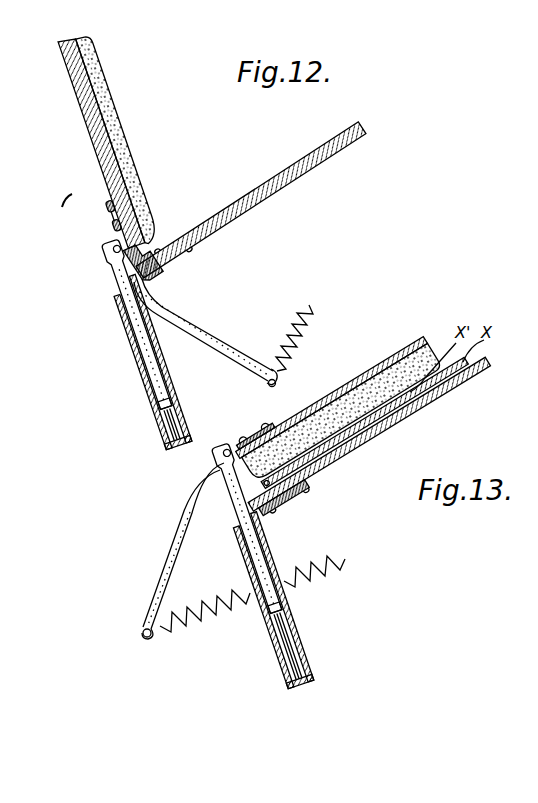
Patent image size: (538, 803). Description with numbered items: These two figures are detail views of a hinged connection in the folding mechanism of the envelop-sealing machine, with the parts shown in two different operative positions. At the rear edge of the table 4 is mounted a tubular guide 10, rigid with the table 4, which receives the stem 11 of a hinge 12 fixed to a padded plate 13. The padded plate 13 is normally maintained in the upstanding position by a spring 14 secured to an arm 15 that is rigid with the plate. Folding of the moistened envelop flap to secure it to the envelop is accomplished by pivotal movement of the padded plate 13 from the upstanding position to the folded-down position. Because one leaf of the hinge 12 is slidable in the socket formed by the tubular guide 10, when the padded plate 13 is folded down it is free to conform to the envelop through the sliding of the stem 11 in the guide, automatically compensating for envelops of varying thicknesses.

In FIG. 12, the table 4 is at (247, 210).
In FIG. 13, the table 4 is at (470, 374).
In FIG. 12, the tubular guide 10 is at (158, 427).
In FIG. 13, the tubular guide 10 is at (300, 655).
In FIG. 12, the stem 11 is at (118, 279).
In FIG. 13, the stem 11 is at (235, 512).
In FIG. 12, the hinge 12 is at (111, 224).
In FIG. 13, the hinge 12 is at (275, 427).
In FIG. 12, the padded plate 13 is at (97, 135).
In FIG. 13, the padded plate 13 is at (400, 347).
In FIG. 12, the spring 14 is at (307, 333).
In FIG. 13, the spring 14 is at (189, 620).
In FIG. 12, the arm 15 is at (190, 314).
In FIG. 13, the arm 15 is at (172, 583).